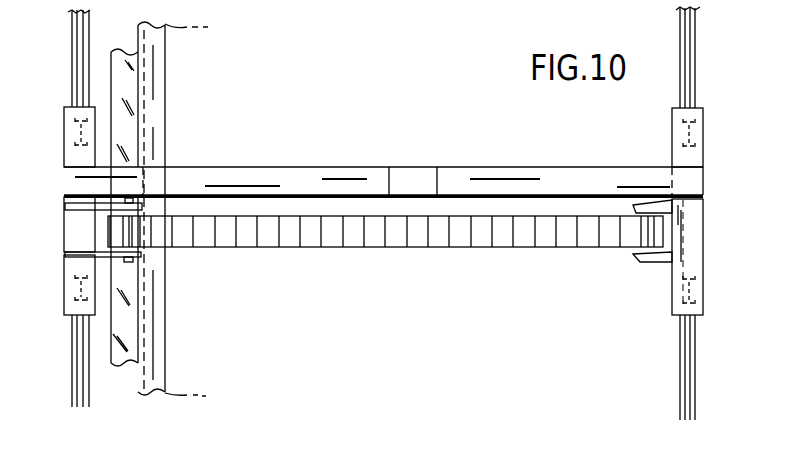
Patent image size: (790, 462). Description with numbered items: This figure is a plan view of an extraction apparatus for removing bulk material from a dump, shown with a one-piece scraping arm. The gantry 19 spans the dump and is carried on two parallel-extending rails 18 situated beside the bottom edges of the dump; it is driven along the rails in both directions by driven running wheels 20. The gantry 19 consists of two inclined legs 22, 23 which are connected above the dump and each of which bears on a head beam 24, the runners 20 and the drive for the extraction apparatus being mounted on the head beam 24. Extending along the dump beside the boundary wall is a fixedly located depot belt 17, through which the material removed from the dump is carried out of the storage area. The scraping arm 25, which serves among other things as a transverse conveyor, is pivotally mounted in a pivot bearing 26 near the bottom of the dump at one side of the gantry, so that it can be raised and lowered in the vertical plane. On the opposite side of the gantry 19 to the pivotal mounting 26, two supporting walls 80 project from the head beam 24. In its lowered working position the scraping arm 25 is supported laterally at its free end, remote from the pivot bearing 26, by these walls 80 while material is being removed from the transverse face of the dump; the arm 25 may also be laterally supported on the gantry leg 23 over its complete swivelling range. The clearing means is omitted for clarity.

The depot belt 17 is at (127, 50).
The rails 18 is at (695, 30).
The gantry 19 is at (338, 165).
The driven running wheels 20 is at (76, 131).
The inclined leg 22 is at (213, 175).
The inclined leg 23 is at (503, 174).
The head beam 24 is at (70, 232).
The scraping arm 25 is at (402, 235).
The pivot bearing 26 is at (135, 259).
The supporting walls 80 is at (644, 256).